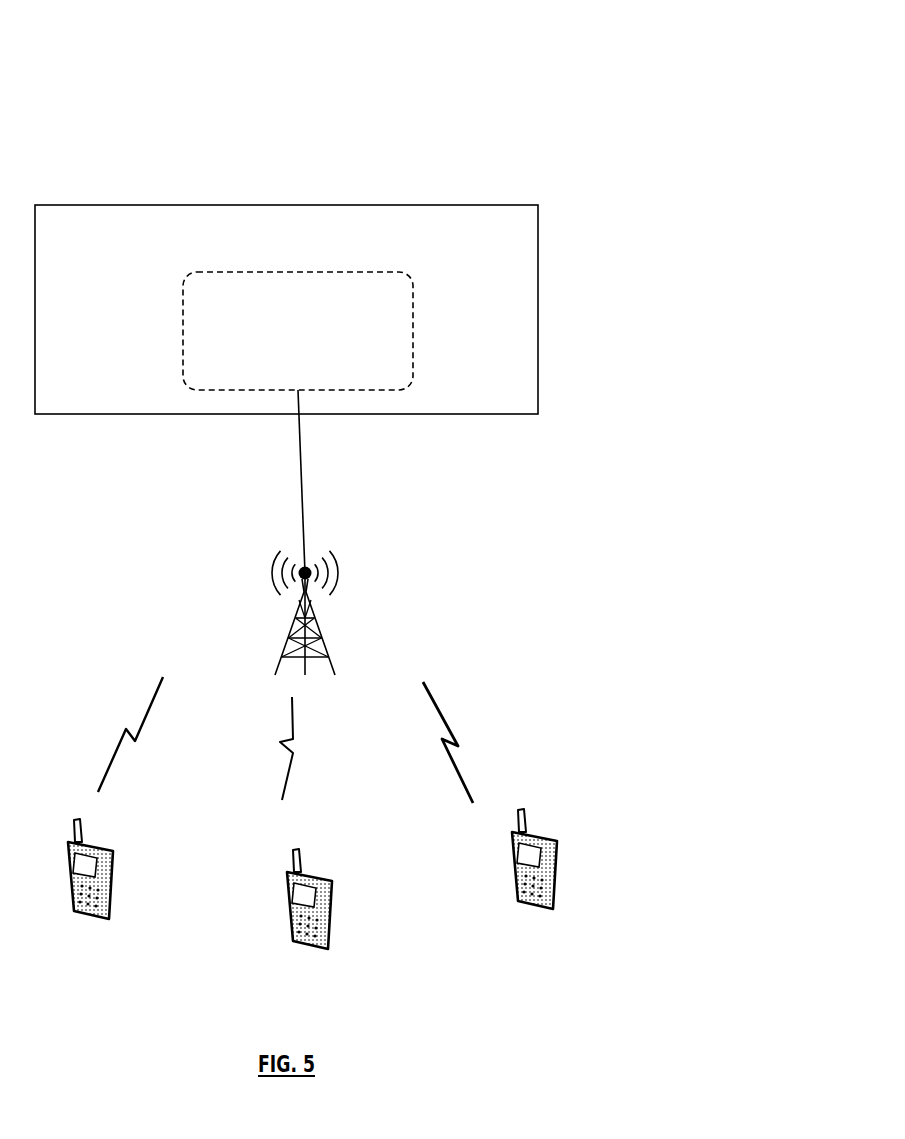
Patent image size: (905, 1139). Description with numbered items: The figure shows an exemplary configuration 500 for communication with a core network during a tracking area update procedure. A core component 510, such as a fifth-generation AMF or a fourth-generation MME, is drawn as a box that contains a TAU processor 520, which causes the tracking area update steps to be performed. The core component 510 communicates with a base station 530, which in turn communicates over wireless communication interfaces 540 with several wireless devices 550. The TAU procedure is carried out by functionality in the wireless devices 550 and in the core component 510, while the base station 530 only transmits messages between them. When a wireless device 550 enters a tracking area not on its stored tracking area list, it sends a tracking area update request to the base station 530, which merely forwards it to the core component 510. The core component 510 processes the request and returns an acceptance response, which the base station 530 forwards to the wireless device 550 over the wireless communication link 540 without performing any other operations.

The exemplary configuration 500 is at (588, 70).
The core component 510 is at (199, 241).
The TAU processor 520 is at (314, 357).
The base station 530 is at (291, 638).
The wireless communication interfaces 540 is at (300, 737).
The wireless devices 550 is at (335, 900).